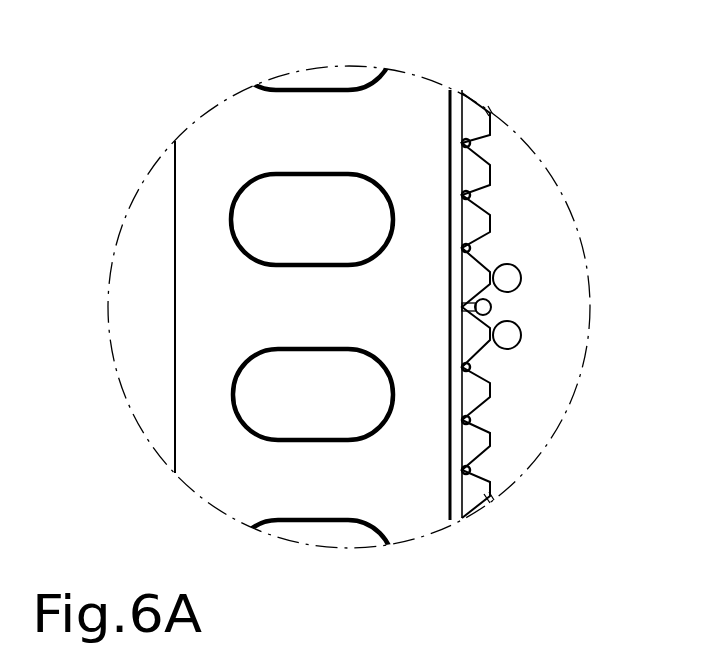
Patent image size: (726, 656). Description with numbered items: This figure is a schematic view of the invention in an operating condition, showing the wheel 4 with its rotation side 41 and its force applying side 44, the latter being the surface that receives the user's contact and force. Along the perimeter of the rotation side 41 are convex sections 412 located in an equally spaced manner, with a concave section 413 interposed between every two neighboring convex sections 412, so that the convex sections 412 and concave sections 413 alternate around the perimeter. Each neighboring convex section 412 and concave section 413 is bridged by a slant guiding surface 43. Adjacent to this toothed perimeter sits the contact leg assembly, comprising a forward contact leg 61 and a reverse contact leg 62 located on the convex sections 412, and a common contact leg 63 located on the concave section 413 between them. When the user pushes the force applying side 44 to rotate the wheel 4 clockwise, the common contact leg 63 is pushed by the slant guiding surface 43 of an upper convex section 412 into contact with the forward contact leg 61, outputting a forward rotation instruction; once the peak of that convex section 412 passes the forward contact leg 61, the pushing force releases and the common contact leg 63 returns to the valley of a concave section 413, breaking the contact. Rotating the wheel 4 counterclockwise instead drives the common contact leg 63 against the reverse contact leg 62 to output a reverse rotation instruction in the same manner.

The wheel 4 is at (174, 233).
The rotation side 41 is at (455, 112).
The convex section 412 is at (490, 220).
The concave section 413 is at (474, 251).
The slant guiding surface 43 is at (473, 415).
The force applying side 44 is at (263, 223).
The forward contact leg 61 is at (508, 336).
The reverse contact leg 62 is at (507, 278).
The common contact leg 63 is at (483, 307).